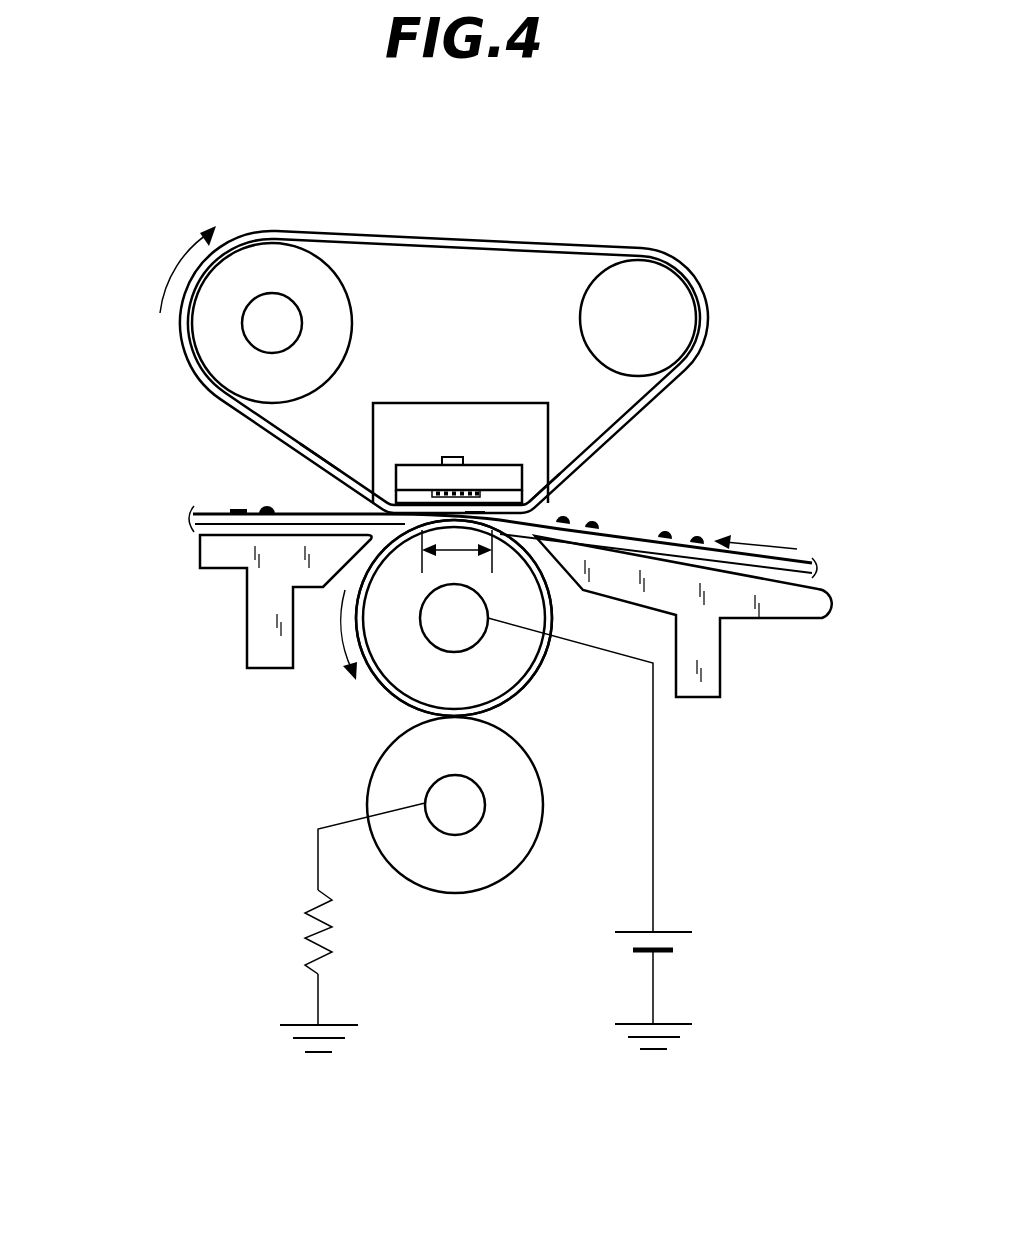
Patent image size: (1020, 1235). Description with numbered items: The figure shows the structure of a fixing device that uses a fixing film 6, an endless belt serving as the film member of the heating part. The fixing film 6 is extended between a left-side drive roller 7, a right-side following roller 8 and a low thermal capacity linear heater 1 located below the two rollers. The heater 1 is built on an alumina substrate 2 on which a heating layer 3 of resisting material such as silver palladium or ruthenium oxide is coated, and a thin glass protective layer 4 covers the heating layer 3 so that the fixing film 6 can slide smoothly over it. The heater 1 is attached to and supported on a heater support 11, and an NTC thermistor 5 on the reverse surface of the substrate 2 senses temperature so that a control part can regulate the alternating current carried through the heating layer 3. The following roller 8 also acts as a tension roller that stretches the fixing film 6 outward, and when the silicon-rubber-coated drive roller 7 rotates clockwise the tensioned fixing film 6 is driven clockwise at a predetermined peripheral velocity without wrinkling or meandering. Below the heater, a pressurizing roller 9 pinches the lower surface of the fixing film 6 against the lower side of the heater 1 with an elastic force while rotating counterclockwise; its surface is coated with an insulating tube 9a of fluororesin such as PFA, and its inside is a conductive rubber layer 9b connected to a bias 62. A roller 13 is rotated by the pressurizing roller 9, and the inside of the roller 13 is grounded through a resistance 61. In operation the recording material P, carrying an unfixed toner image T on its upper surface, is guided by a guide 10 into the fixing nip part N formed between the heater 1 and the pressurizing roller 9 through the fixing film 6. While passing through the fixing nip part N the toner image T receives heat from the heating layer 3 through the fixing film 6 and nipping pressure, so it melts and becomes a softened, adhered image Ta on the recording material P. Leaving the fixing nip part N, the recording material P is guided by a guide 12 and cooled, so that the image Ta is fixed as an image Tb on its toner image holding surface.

The low thermal capacity linear heater 1 is at (493, 465).
The alumina substrate 2 is at (423, 462).
The heating layer 3 is at (340, 482).
The protective layer 4 is at (524, 506).
The NTC thermistor 5 is at (455, 455).
The fixing film 6 is at (453, 242).
The drive roller 7 is at (287, 255).
The following roller 8 is at (633, 285).
The pressurizing roller 9 is at (530, 688).
The insulating tube 9a is at (378, 683).
The conductive rubber layer 9b is at (413, 685).
The guide 10 is at (805, 608).
The heater support 11 is at (477, 405).
The guide 12 is at (265, 670).
The roller 13 is at (528, 828).
The resistance 61 is at (312, 948).
The bias 62 is at (690, 942).
The unfixed toner image T is at (665, 537).
The softened and adhered image Ta is at (477, 510).
The fixed image Tb is at (260, 508).
The recording material P is at (815, 560).
The fixing nip part N is at (457, 558).